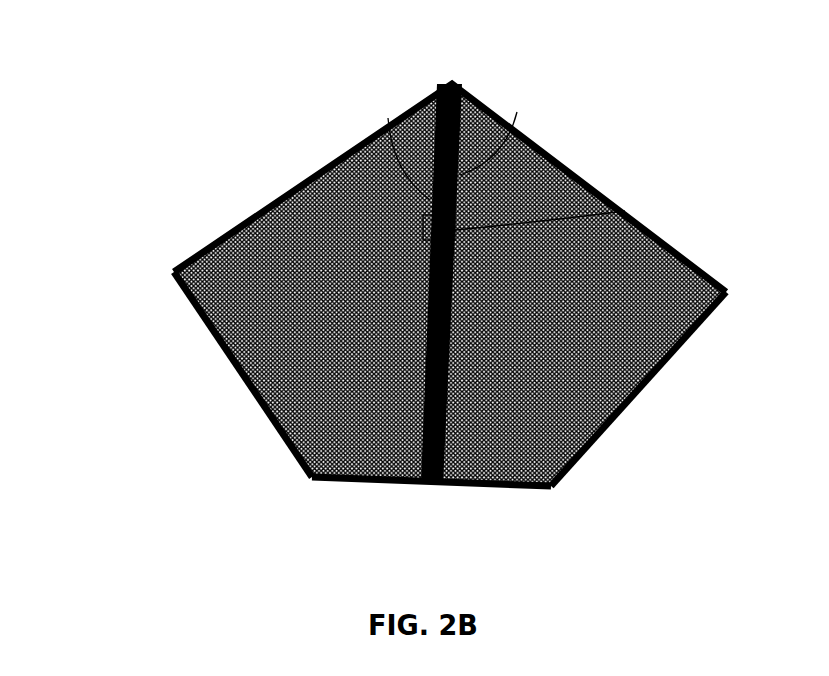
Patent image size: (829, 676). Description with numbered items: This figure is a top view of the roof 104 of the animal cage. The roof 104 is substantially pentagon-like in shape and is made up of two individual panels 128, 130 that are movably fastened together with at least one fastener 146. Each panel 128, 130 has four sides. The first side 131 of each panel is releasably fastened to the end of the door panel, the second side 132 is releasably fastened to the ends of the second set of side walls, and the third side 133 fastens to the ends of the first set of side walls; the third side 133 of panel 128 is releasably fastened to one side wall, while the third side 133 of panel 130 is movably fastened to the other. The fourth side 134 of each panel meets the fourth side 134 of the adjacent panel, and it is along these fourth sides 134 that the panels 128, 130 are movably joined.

The roof 104 is at (414, 305).
The panel 128 is at (305, 312).
The panel 130 is at (527, 312).
The first side 131 is at (377, 488).
The second side 132 is at (230, 368).
The third side 133 is at (287, 184).
The fourth side 134 is at (385, 122).
The fastener 146 is at (625, 211).